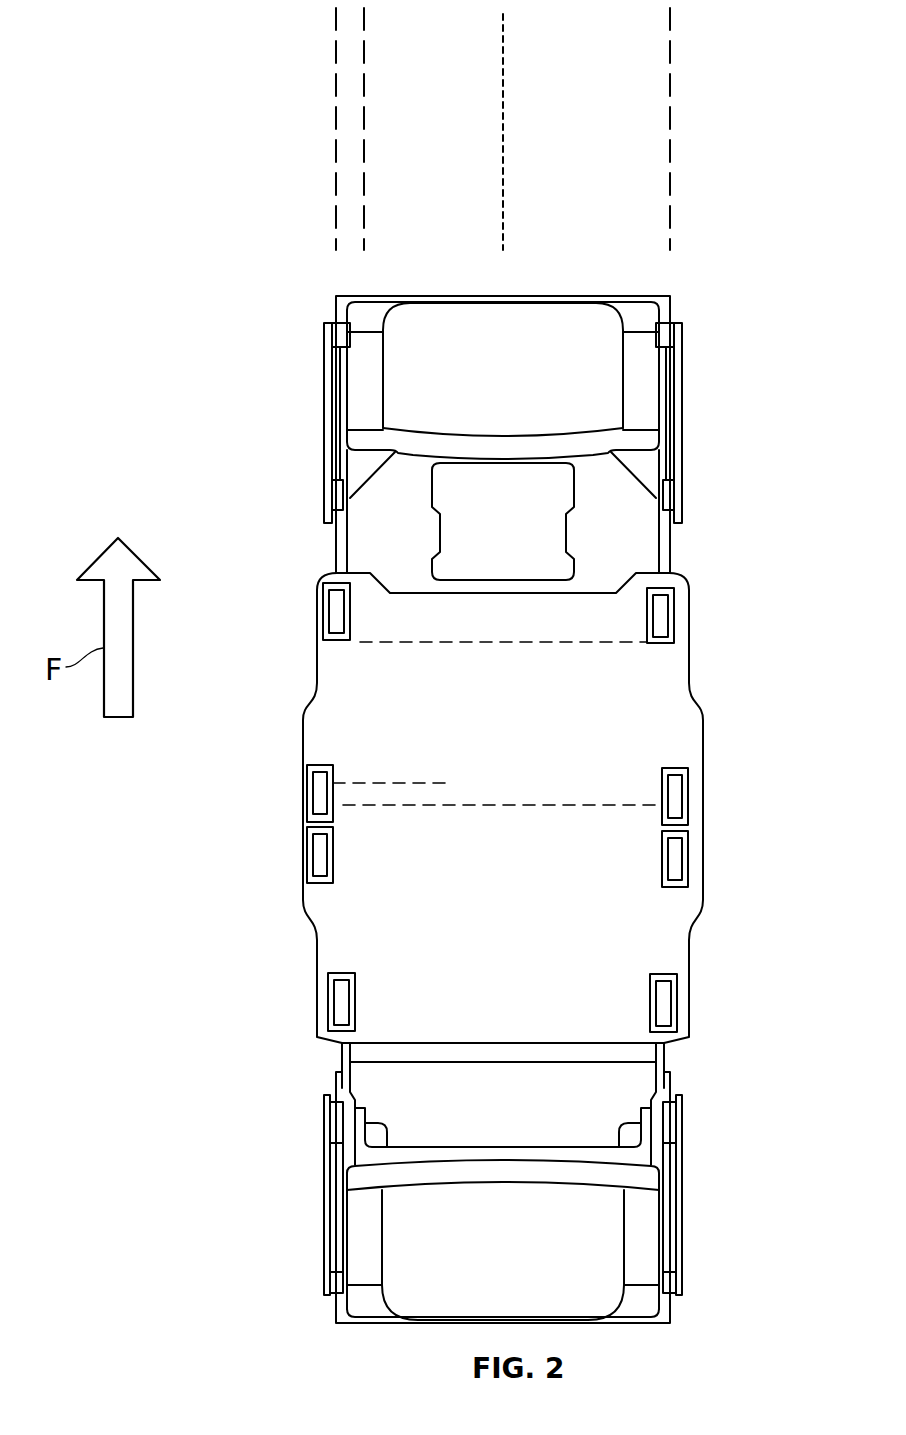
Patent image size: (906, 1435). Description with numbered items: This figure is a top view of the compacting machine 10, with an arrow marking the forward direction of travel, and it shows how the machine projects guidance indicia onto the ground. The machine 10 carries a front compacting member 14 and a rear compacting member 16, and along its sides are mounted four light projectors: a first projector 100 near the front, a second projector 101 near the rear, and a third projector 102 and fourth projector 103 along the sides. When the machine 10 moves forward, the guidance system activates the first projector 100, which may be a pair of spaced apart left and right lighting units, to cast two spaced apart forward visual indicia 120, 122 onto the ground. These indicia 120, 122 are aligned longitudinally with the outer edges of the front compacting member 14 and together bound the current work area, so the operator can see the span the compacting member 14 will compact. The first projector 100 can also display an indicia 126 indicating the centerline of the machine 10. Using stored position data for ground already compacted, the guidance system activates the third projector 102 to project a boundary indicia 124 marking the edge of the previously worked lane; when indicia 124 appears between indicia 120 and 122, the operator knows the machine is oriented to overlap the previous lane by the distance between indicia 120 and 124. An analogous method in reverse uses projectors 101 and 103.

The compacting machine 10 is at (700, 720).
The front compacting member 14 is at (670, 299).
The rear compacting member 16 is at (675, 1087).
The first projector 100 is at (336, 610).
The second projector 101 is at (338, 1002).
The third projector 102 is at (318, 792).
The fourth projector 103 is at (318, 857).
The forward visual indicia 120 is at (336, 163).
The forward visual indicia 122 is at (670, 192).
The boundary visual indicia 124 is at (364, 92).
The centerline indicia 126 is at (503, 143).